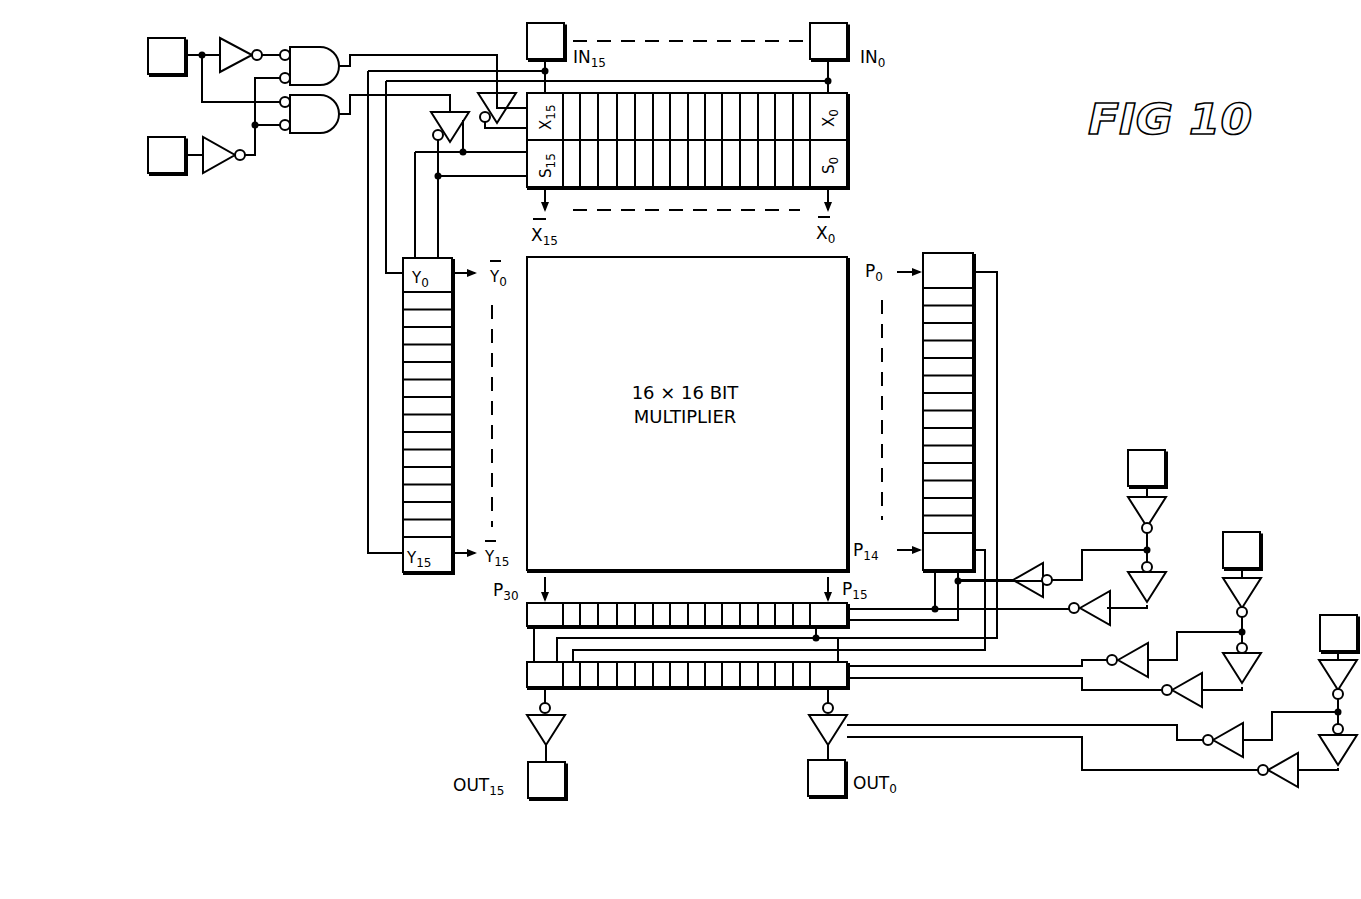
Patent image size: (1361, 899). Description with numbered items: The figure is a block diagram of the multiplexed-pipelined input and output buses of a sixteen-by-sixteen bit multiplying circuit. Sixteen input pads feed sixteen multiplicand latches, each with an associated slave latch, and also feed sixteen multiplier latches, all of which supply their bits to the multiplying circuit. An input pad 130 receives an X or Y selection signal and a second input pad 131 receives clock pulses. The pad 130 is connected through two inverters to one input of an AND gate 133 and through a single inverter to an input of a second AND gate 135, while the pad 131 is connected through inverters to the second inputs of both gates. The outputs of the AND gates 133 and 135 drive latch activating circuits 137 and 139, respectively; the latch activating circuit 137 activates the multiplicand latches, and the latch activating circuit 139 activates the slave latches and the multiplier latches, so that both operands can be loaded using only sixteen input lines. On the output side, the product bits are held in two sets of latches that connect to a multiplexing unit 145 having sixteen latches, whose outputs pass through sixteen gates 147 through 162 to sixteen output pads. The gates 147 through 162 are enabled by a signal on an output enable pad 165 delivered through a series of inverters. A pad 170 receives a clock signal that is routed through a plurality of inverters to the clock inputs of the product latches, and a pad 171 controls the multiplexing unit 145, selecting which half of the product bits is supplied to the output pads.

The input pad 130 is at (184, 74).
The second input pad 131 is at (184, 173).
The AND gate 133 is at (330, 48).
The second AND gate 135 is at (306, 135).
The latch activating circuit 137 is at (507, 93).
The latch activating circuit 139 is at (433, 114).
The multiplexing unit 145 is at (527, 678).
The gate 147 is at (838, 732).
The gate 162 is at (540, 745).
The output enable pad 165 is at (1314, 620).
The pad 170 is at (1170, 454).
The pad 171 is at (1265, 536).